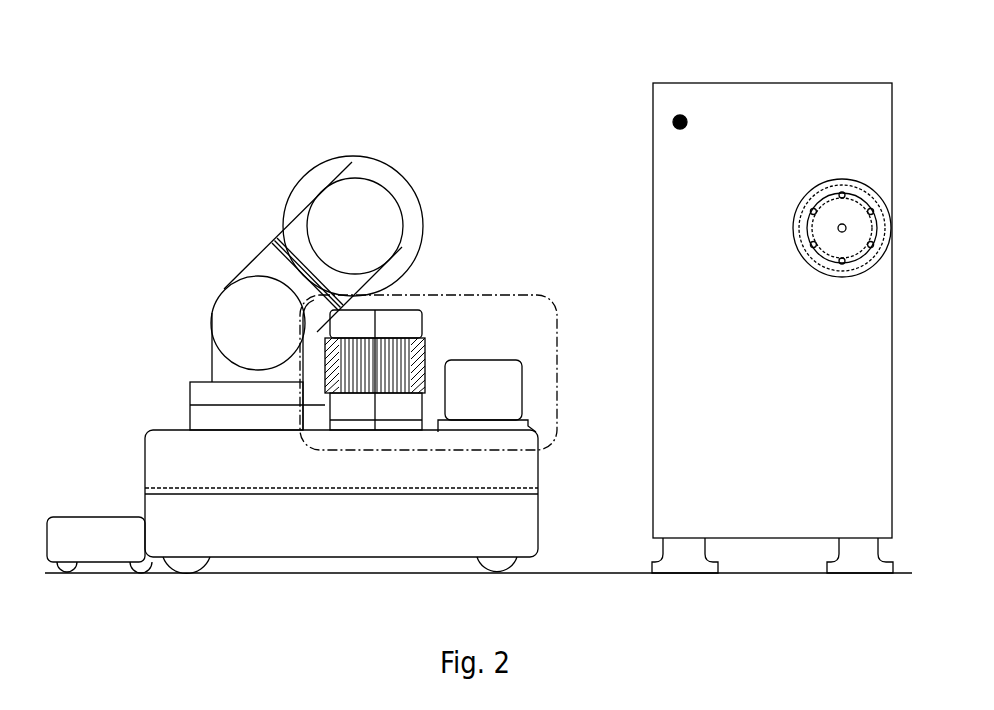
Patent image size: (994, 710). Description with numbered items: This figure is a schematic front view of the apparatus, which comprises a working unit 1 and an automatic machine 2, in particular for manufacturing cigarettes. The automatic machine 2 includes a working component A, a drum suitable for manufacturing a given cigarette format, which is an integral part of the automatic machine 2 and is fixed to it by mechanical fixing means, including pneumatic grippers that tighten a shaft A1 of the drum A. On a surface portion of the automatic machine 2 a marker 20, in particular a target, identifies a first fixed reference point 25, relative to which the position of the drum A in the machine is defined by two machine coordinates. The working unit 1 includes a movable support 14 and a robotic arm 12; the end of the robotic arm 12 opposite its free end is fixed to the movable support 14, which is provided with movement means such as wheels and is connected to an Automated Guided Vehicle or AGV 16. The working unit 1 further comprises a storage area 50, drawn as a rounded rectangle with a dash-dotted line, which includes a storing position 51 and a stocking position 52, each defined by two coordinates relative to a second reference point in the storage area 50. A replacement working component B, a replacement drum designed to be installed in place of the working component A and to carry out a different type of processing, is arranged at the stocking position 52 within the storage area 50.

The working unit 1 is at (216, 119).
The automatic machine 2 is at (596, 143).
The robotic arm 12 is at (272, 268).
The movable support 14 is at (183, 452).
The Automated Guided Vehicle (AGV) 16 is at (113, 528).
The marker 20 is at (675, 118).
The first fixed reference point 25 is at (684, 116).
The storage area 50 is at (506, 337).
The storing position 51 is at (499, 439).
The stocking position 52 is at (381, 441).
The working component A is at (848, 181).
The shaft A1 is at (840, 224).
The replacement working component B is at (408, 323).